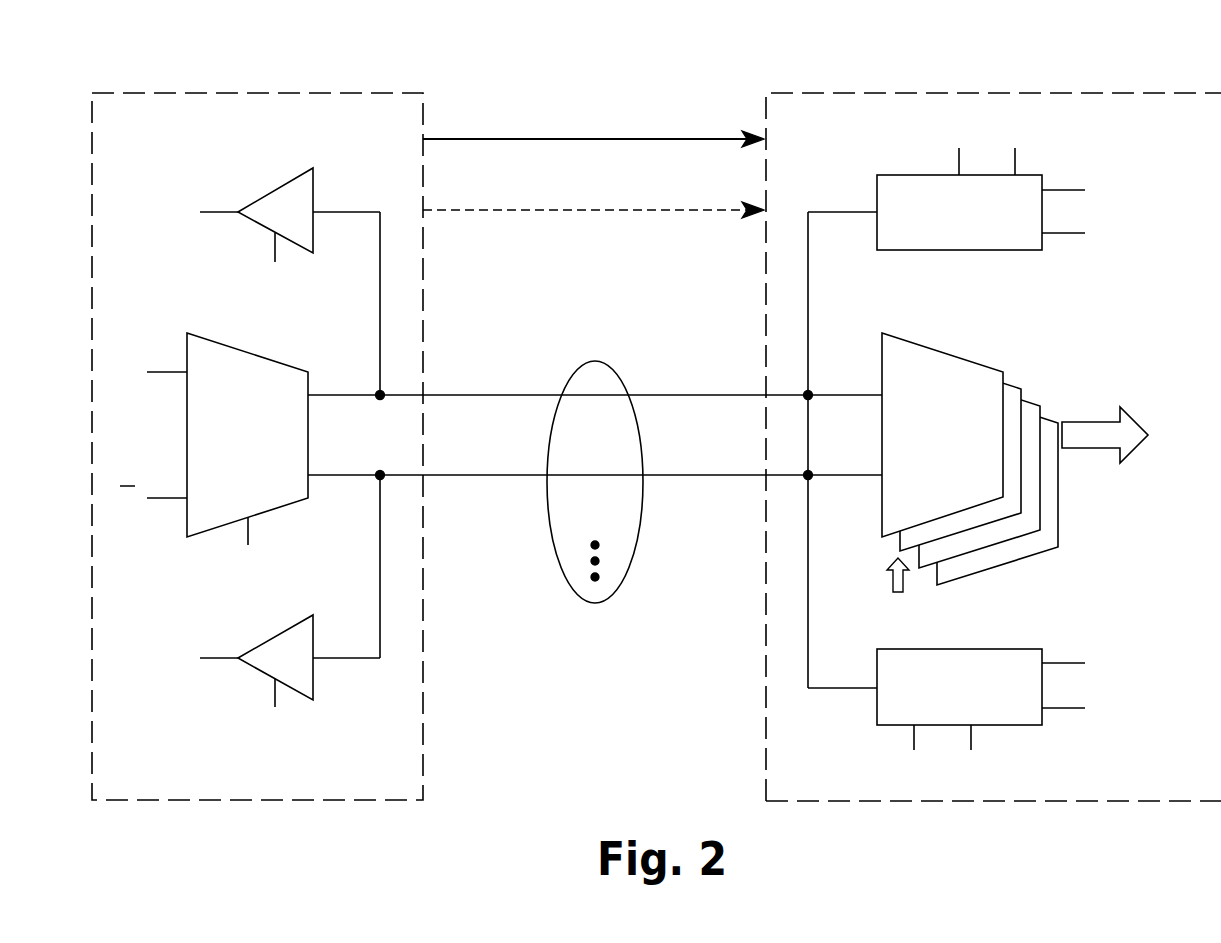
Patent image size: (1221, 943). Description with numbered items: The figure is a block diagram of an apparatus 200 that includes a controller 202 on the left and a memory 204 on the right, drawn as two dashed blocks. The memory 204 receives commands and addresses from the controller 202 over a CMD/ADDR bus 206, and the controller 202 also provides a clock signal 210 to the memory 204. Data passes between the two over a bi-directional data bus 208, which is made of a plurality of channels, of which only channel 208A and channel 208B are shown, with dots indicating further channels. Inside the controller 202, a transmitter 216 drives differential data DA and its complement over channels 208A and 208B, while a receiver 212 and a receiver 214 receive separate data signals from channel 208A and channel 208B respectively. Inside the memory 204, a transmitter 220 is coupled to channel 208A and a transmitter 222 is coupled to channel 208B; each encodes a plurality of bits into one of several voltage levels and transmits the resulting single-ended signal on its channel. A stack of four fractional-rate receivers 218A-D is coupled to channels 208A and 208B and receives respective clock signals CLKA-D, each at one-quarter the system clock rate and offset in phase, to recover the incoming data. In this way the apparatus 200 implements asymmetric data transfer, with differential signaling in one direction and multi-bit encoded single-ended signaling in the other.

The apparatus 200 is at (728, 62).
The controller 202 is at (424, 770).
The memory 204 is at (765, 770).
The CMD/ADDR (C/A) bus 206 is at (714, 141).
The data bus 208 is at (595, 510).
The channel 208A is at (597, 397).
The channel 208B is at (597, 477).
The clock signal 210 is at (714, 212).
The receiver 212 is at (290, 182).
The receiver 214 is at (290, 628).
The transmitter 216 is at (250, 353).
The fractional-rate receivers 218A-D is at (1000, 567).
The transmitter 220 is at (960, 252).
The transmitter 222 is at (1028, 726).